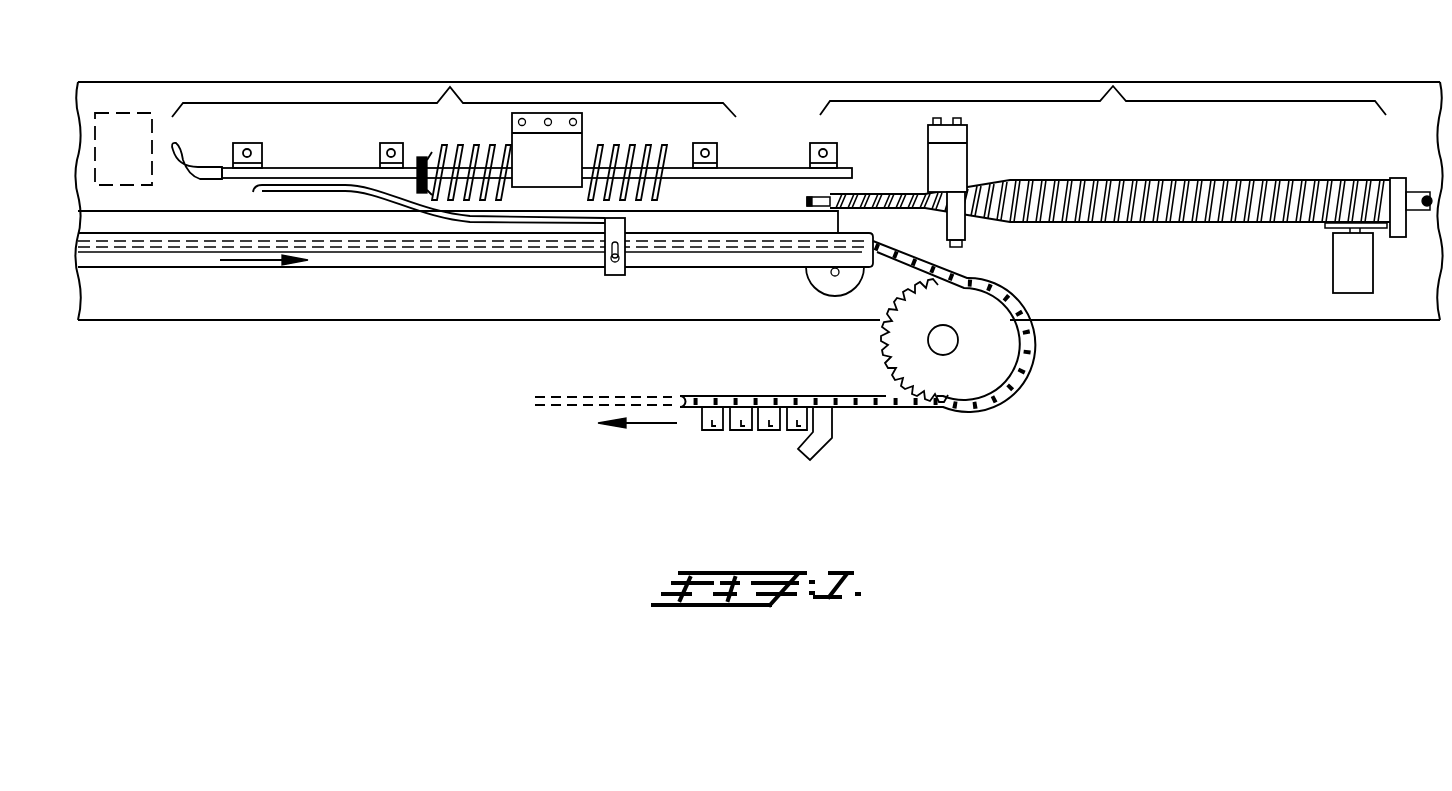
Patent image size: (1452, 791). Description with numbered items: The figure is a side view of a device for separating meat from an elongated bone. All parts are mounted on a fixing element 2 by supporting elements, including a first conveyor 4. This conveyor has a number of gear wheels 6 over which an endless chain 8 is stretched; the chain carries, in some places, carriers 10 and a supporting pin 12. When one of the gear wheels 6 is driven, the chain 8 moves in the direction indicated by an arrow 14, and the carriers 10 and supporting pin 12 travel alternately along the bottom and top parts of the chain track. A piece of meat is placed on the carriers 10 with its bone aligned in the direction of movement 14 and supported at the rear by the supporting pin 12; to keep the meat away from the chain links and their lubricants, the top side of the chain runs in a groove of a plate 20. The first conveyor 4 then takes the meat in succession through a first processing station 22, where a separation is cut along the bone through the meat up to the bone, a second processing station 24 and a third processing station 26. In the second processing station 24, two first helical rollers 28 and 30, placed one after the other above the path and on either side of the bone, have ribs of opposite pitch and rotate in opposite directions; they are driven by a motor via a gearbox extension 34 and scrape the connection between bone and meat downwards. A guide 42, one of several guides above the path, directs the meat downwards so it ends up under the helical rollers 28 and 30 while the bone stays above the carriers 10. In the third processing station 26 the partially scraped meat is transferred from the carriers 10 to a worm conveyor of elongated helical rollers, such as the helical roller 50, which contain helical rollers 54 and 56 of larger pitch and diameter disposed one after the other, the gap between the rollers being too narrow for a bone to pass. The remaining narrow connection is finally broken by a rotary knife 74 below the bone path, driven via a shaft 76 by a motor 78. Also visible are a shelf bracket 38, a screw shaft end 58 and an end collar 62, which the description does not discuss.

The fixing element 2 is at (780, 97).
The first conveyor 4 is at (1003, 388).
The gear wheels 6 is at (982, 352).
The endless chain 8 is at (882, 410).
The carriers 10 is at (797, 430).
The supporting pin 12 is at (818, 443).
The arrow 14 is at (260, 260).
The plate 20 is at (142, 248).
The first processing station 22 is at (150, 113).
The second processing station 24 is at (455, 85).
The third processing station 26 is at (1113, 84).
The first helical roller 28 is at (450, 150).
The first helical roller 30 is at (640, 150).
The gearbox extension 34 is at (538, 147).
The guide rail with hook 38 is at (310, 172).
The guide 42 is at (330, 185).
The elongated helical roller 50 is at (1153, 220).
The helical roller 54 is at (1057, 218).
The helical roller 56 is at (1227, 180).
The screw shaft end 58 is at (878, 200).
The end collar / bearing 62 is at (1415, 197).
The rotary knife 74 is at (1323, 230).
The shaft 76 is at (1335, 232).
The motor 78 is at (1353, 287).